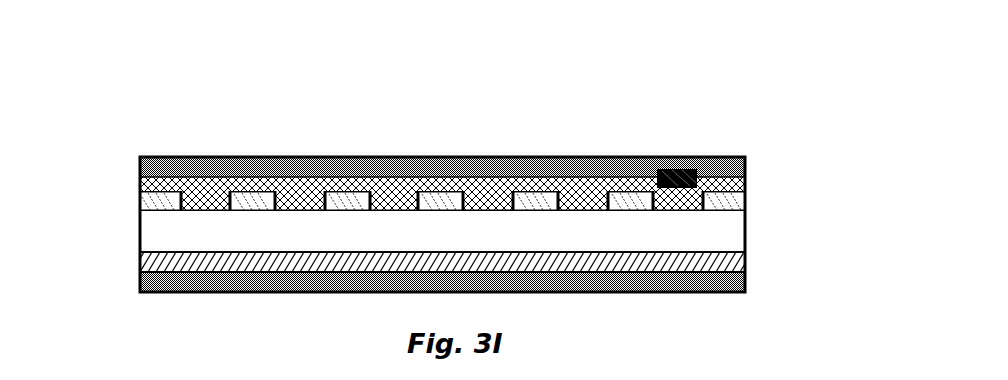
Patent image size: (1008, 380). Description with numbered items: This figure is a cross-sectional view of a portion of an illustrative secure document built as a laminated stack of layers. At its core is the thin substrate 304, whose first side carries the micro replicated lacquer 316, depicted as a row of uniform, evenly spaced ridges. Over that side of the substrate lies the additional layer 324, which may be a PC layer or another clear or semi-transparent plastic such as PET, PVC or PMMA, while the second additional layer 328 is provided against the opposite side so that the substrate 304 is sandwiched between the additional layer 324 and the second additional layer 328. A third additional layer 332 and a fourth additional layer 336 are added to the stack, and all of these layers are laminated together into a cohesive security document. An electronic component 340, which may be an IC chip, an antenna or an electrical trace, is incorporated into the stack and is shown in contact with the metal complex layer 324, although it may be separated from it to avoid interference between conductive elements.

The substrate 304 is at (746, 232).
The micro replicated lacquer 316 is at (140, 203).
The additional layer 324 is at (140, 182).
The second additional layer 328 is at (140, 272).
The third additional layer 332 is at (745, 165).
The fourth additional layer 336 is at (746, 281).
The electronic component 340 is at (680, 168).